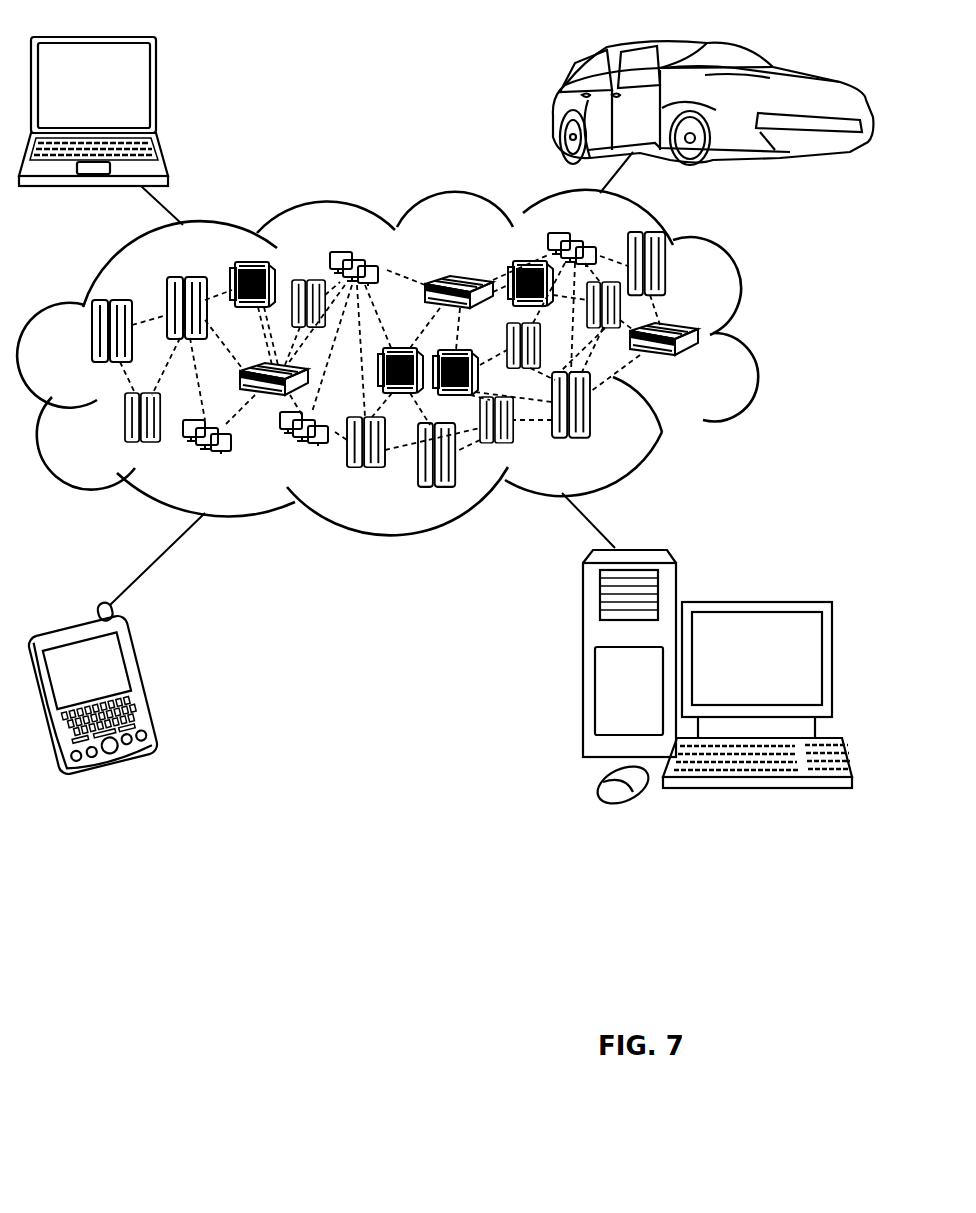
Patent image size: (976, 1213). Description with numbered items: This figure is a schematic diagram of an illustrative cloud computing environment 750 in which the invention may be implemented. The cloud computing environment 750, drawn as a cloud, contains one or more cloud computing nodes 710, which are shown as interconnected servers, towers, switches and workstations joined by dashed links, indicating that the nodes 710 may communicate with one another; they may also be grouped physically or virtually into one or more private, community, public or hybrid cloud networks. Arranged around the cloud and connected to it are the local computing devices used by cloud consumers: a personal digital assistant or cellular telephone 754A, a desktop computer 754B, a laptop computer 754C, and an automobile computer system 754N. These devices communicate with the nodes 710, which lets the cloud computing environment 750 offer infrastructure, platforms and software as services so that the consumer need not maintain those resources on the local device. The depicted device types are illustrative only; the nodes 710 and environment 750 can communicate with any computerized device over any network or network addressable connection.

The cloud computing nodes 710 is at (705, 369).
The cloud computing environment 750 is at (755, 338).
The personal digital assistant or cellular telephone 754A is at (147, 685).
The desktop computer 754B is at (755, 602).
The laptop computer 754C is at (158, 93).
The automobile computer system 754N is at (553, 100).